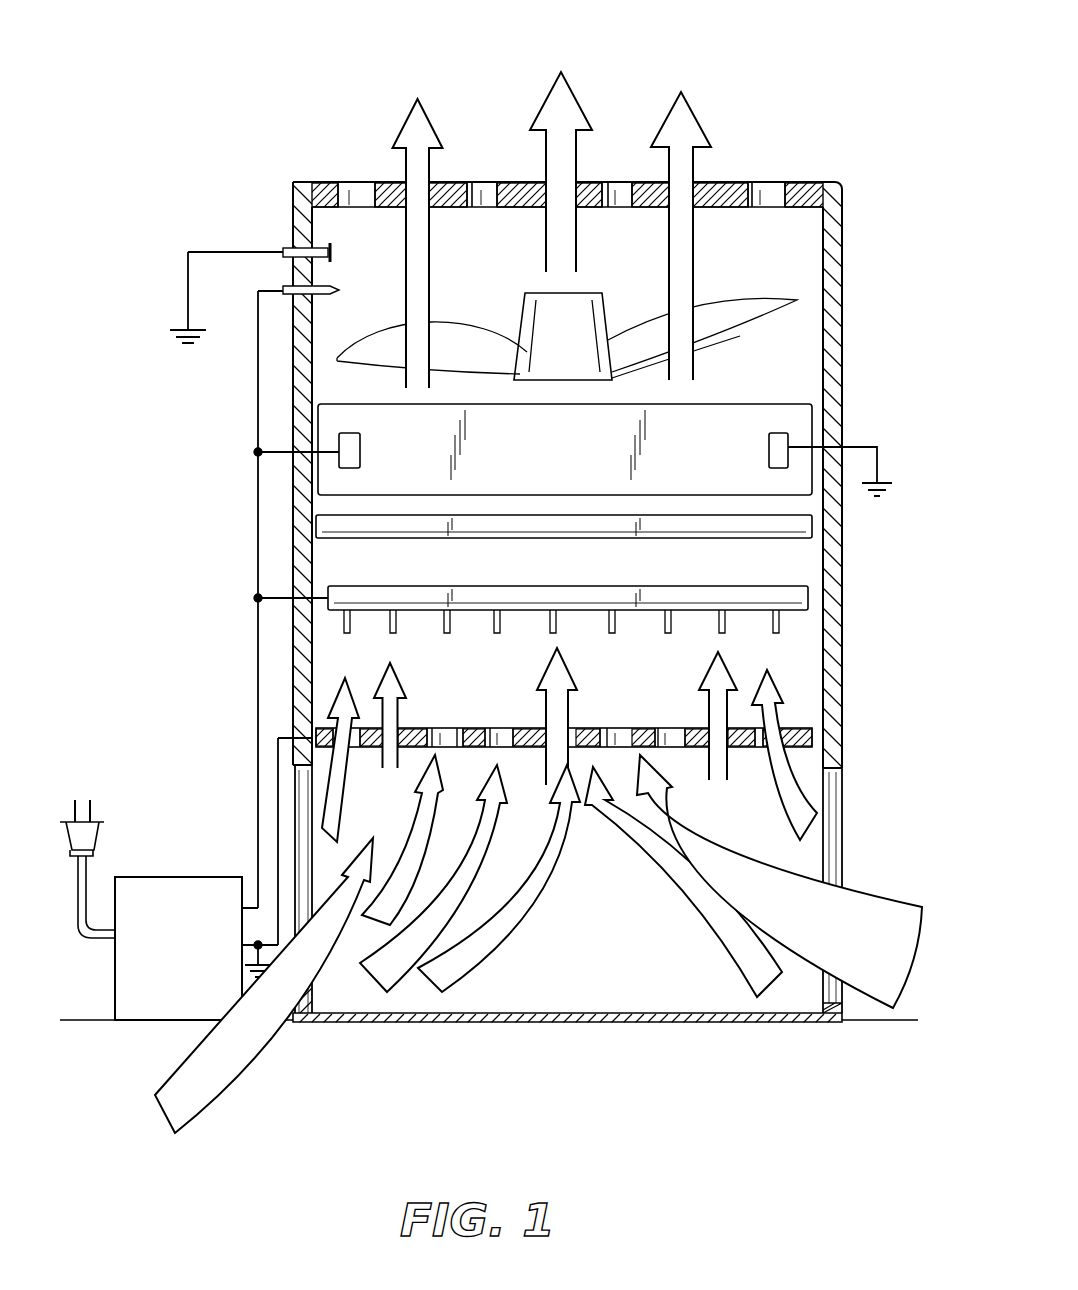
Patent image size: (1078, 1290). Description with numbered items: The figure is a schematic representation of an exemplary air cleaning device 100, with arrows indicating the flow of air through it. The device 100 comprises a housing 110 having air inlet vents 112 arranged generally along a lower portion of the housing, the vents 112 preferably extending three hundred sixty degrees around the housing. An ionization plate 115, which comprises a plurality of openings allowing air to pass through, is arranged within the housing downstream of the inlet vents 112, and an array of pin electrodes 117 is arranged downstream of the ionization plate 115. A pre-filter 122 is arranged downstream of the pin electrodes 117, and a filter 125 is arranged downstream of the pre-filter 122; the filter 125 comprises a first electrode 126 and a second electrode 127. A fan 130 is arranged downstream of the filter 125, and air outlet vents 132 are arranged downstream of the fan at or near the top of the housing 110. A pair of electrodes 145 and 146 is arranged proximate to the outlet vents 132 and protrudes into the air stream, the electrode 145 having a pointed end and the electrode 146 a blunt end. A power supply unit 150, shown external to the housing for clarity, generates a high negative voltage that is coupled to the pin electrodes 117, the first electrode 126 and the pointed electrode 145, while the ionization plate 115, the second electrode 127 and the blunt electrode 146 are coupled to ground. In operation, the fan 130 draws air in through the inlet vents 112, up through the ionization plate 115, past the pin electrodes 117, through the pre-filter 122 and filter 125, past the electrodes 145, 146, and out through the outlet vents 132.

The air cleaning device 100 is at (193, 47).
The housing 110 is at (295, 206).
The air inlet vents 112 is at (879, 833).
The ionization plate 115 is at (815, 738).
The array of pin electrodes 117 is at (812, 600).
The pre-filter 122 is at (815, 530).
The filter 125 is at (800, 415).
The first electrode 126 is at (350, 452).
The second electrode 127 is at (770, 452).
The fan 130 is at (619, 302).
The air outlet vents 132 is at (353, 186).
The pointed electrode 145 is at (338, 289).
The blunt electrode 146 is at (334, 251).
The power supply unit 150 is at (168, 877).